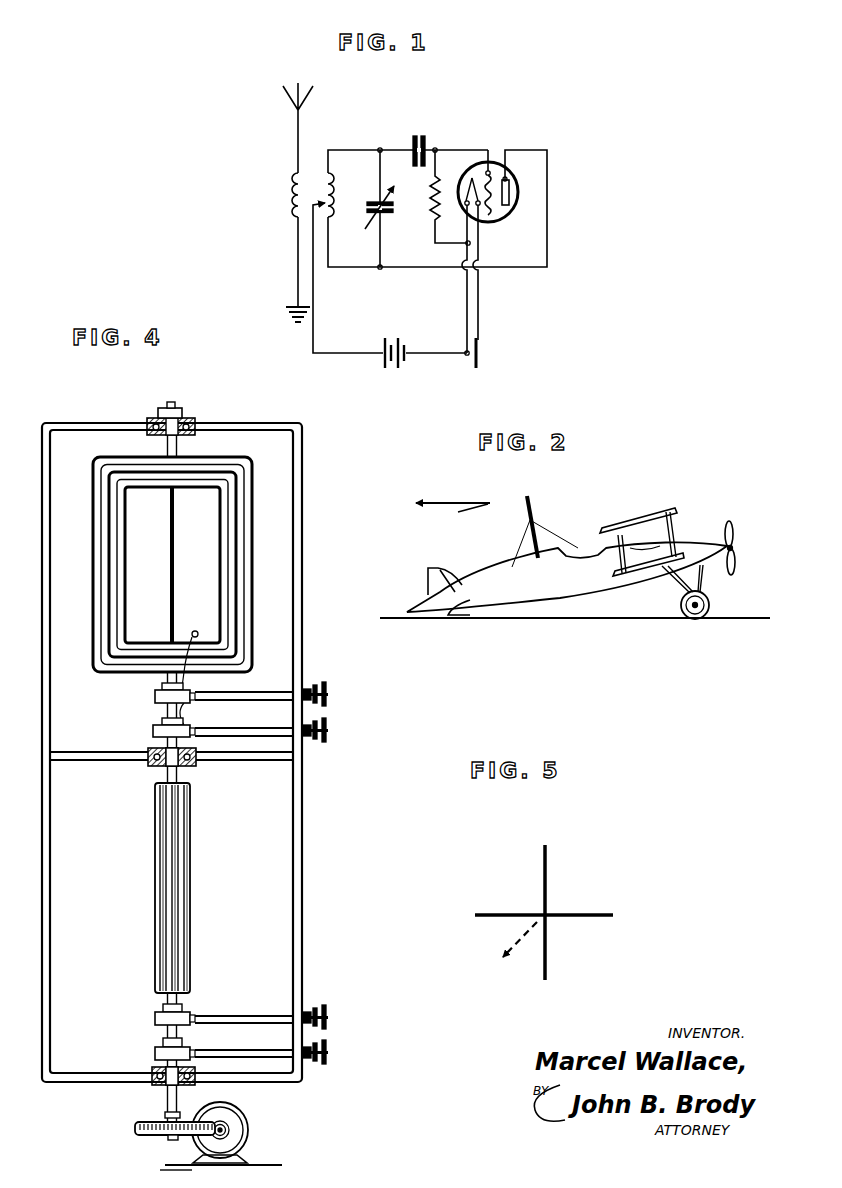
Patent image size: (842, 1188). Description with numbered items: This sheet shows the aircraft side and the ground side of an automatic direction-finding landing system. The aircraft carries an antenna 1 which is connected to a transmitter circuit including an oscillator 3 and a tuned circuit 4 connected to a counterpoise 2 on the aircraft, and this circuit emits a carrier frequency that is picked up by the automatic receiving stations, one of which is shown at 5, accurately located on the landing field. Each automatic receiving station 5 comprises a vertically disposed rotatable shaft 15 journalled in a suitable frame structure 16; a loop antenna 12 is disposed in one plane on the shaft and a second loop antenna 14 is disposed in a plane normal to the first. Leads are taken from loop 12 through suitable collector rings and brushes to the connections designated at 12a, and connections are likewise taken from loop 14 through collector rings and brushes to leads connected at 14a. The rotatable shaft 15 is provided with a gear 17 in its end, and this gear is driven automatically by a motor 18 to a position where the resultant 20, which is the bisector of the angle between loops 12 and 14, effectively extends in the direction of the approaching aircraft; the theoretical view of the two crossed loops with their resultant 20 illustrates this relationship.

In FIG. 1, the antenna 1 is at (306, 101).
In FIG. 2, the antenna 1 is at (553, 512).
In FIG. 1, the counterpoise 2 is at (288, 305).
In FIG. 1, the oscillator 3 is at (494, 143).
In FIG. 1, the tuned circuit 4 is at (367, 208).
In FIG. 4, the automatic receiving station 5 is at (33, 441).
In FIG. 4, the loop antenna 12 is at (106, 556).
In FIG. 5, the loop antenna 12 is at (548, 874).
In FIG. 4, the connections 12a is at (318, 774).
In FIG. 4, the loop antenna 14 is at (160, 853).
In FIG. 5, the loop antenna 14 is at (587, 919).
In FIG. 4, the leads 14a is at (320, 1106).
In FIG. 4, the rotatable shaft 15 is at (171, 582).
In FIG. 4, the frame structure 16 is at (296, 468).
In FIG. 4, the gear 17 is at (148, 1136).
In FIG. 4, the motor 18 is at (237, 1130).
In FIG. 5, the resultant 20 is at (507, 941).